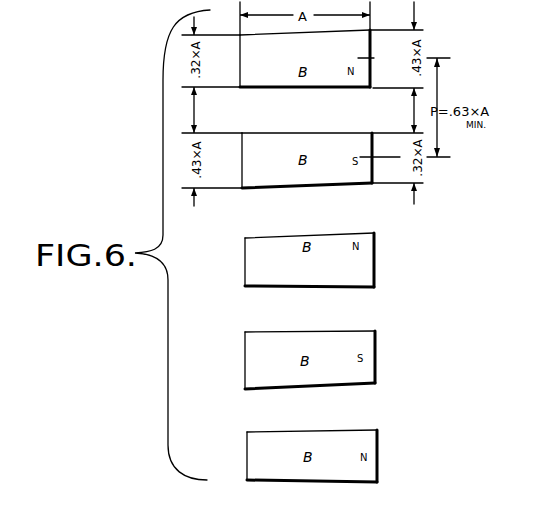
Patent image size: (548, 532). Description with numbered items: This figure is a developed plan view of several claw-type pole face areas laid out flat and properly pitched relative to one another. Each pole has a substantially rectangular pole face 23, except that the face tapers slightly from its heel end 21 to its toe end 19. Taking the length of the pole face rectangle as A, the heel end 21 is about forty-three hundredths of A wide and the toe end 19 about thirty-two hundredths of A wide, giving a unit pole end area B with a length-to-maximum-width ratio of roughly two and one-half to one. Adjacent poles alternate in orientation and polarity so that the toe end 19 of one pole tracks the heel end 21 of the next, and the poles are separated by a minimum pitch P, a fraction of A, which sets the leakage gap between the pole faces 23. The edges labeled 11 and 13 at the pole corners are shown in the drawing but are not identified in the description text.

The end face of magnet block 11 is at (253, 152).
The end face of magnet block 13 is at (252, 53).
The toe end 19 is at (240, 70).
The heel end 21 is at (372, 72).
The pole face 23 is at (278, 78).